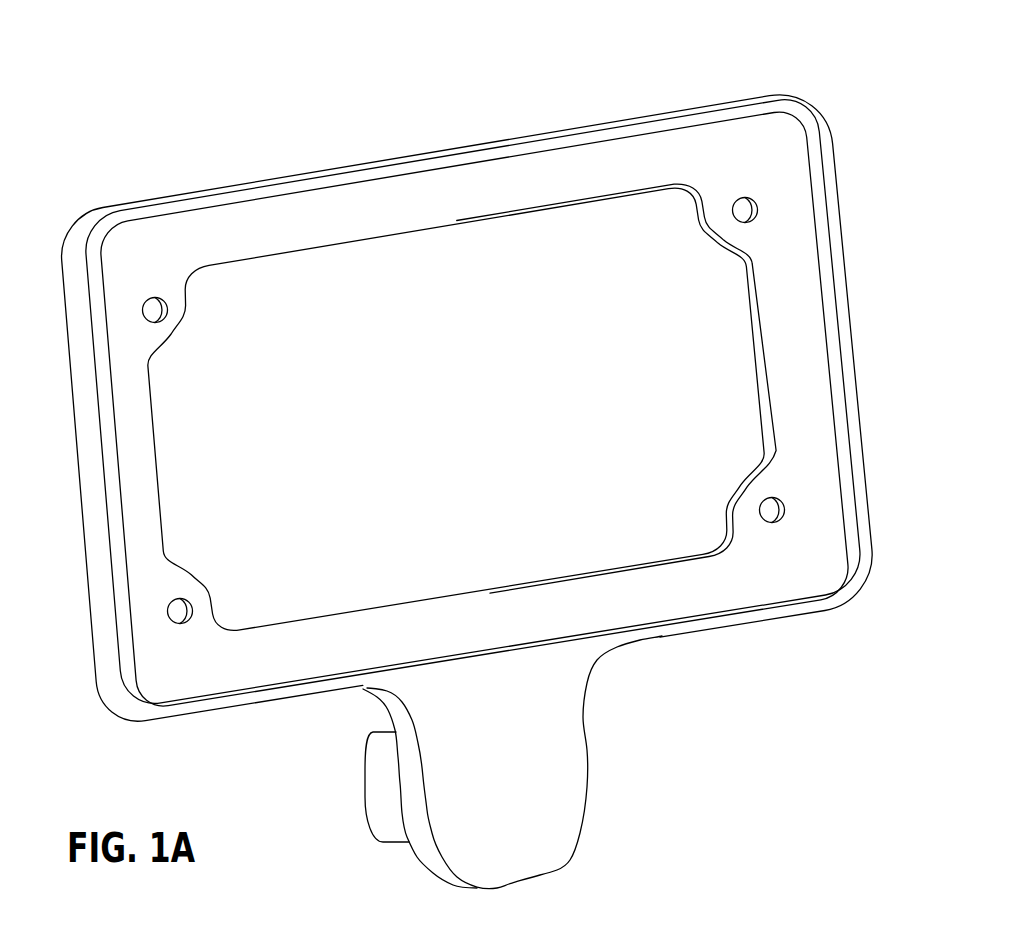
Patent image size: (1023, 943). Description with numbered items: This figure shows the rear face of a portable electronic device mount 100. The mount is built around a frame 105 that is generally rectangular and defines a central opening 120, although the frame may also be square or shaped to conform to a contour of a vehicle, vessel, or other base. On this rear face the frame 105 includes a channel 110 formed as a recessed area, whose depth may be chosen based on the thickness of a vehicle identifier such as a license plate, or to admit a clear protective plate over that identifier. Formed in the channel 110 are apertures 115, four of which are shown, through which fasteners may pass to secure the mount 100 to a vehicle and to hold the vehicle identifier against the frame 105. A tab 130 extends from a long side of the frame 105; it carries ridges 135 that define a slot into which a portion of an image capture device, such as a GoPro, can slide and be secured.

The portable electronic device mount 100 is at (172, 156).
The frame 105 is at (736, 89).
The channel 110 is at (822, 217).
The apertures 115 is at (760, 211).
The opening 120 is at (690, 447).
The tab 130 is at (602, 760).
The ridges 135 is at (363, 808).